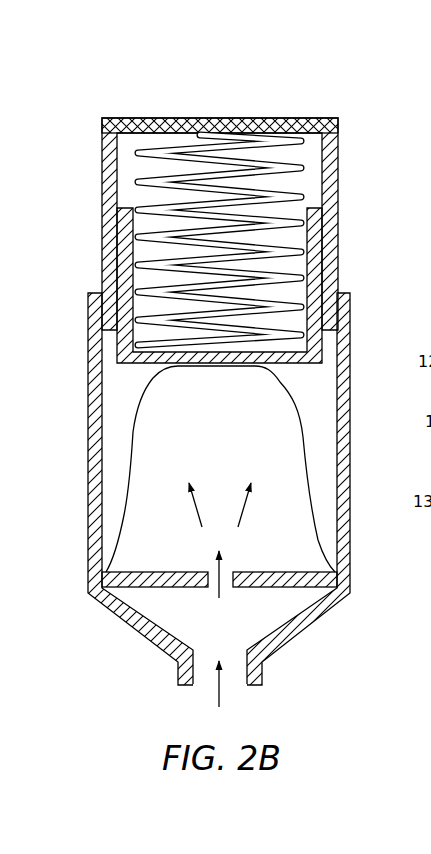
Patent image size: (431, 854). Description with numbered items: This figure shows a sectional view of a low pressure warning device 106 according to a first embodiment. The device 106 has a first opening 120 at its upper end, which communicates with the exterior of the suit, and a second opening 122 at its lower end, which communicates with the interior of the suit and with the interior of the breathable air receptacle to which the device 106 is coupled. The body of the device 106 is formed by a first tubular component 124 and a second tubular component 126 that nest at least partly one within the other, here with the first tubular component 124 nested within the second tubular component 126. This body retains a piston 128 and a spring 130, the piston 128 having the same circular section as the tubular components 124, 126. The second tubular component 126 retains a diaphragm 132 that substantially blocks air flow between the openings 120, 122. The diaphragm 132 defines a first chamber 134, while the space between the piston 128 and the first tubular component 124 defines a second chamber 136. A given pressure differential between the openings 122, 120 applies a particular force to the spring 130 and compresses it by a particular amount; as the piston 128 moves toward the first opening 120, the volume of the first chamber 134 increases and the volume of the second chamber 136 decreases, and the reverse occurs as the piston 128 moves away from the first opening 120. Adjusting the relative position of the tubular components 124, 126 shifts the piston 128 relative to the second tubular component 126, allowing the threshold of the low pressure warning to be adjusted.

The low pressure warning device 106 is at (243, 71).
The first opening 120 is at (223, 126).
The second opening 122 is at (207, 682).
The first tubular component 124 is at (141, 118).
The second tubular component 126 is at (95, 347).
The piston 128 is at (323, 347).
The spring 130 is at (147, 167).
The diaphragm 132 is at (133, 430).
The first chamber 134 is at (290, 520).
The second chamber 136 is at (313, 170).